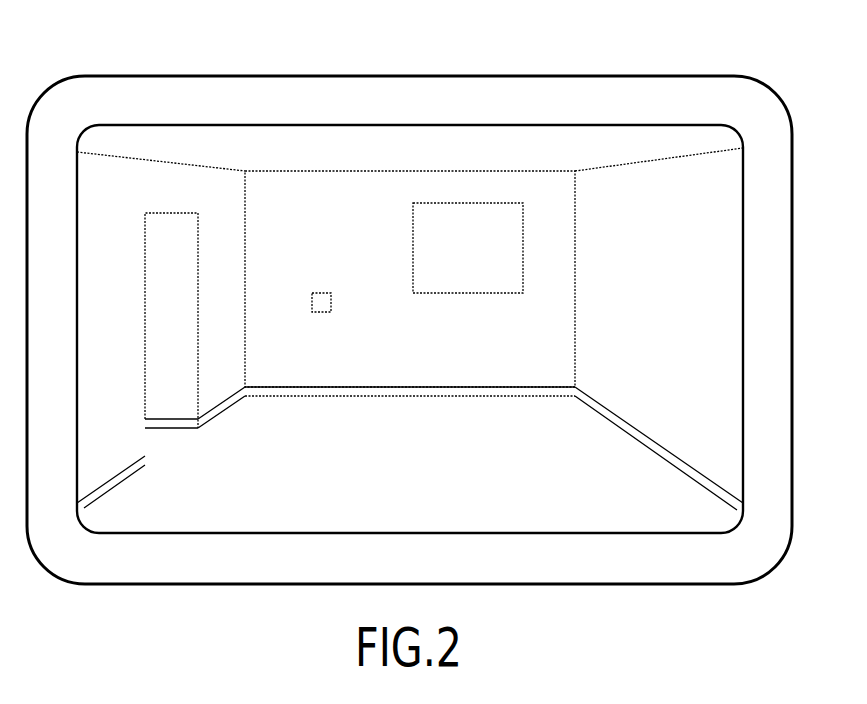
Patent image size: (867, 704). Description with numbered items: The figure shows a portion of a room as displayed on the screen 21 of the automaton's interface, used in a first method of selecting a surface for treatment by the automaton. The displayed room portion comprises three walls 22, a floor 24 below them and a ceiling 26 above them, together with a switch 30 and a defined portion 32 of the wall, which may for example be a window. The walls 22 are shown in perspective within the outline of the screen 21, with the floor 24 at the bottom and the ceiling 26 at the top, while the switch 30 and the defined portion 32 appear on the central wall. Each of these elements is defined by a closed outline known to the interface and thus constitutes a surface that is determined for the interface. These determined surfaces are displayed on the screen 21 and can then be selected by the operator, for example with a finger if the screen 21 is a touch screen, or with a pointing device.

The screen 21 is at (172, 75).
The walls 22 is at (118, 295).
The floor 24 is at (422, 471).
The ceiling 26 is at (425, 157).
The switch 30 is at (320, 311).
The defined portion of the wall 32 is at (482, 262).